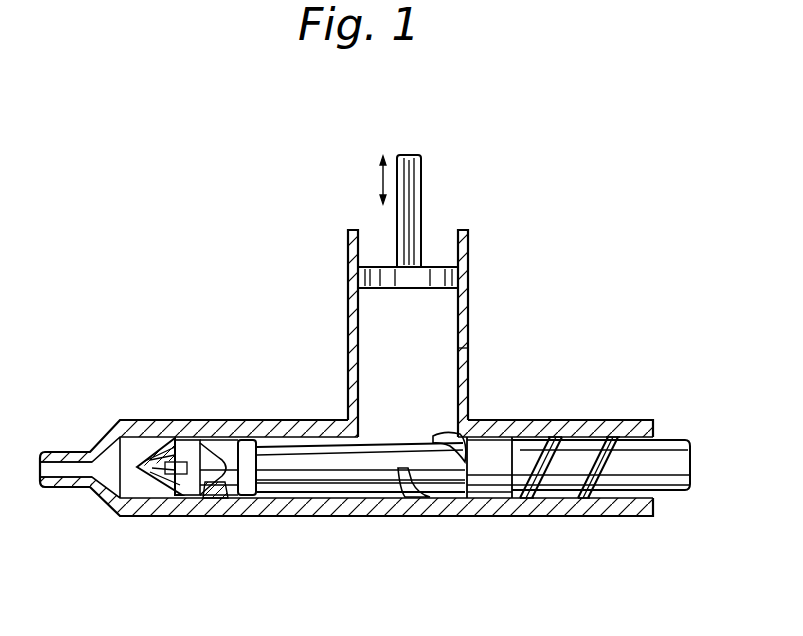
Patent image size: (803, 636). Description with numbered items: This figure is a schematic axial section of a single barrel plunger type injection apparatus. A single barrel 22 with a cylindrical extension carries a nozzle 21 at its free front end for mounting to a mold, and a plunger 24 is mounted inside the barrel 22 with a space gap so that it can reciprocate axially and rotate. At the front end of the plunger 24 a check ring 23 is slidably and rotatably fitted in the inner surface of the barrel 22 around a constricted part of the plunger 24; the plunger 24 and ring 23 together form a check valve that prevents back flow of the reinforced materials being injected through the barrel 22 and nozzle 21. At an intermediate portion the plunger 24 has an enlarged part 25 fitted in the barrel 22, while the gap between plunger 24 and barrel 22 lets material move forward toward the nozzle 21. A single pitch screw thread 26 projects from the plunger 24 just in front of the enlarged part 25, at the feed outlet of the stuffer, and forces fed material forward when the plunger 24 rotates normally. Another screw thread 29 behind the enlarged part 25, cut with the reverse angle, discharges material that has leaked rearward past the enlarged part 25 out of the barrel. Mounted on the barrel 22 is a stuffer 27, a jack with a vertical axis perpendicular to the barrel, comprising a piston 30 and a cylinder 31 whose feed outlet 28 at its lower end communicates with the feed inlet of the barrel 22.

The nozzle 21 is at (62, 451).
The barrel 22 is at (185, 420).
The check ring 23 is at (203, 497).
The plunger 24 is at (338, 495).
The enlarged part 25 is at (492, 452).
The screw thread 26 is at (410, 500).
The stuffer 27 is at (348, 308).
The feed outlet 28 is at (390, 425).
The screw thread 29 is at (598, 473).
The piston 30 is at (413, 192).
The cylinder 31 is at (466, 320).